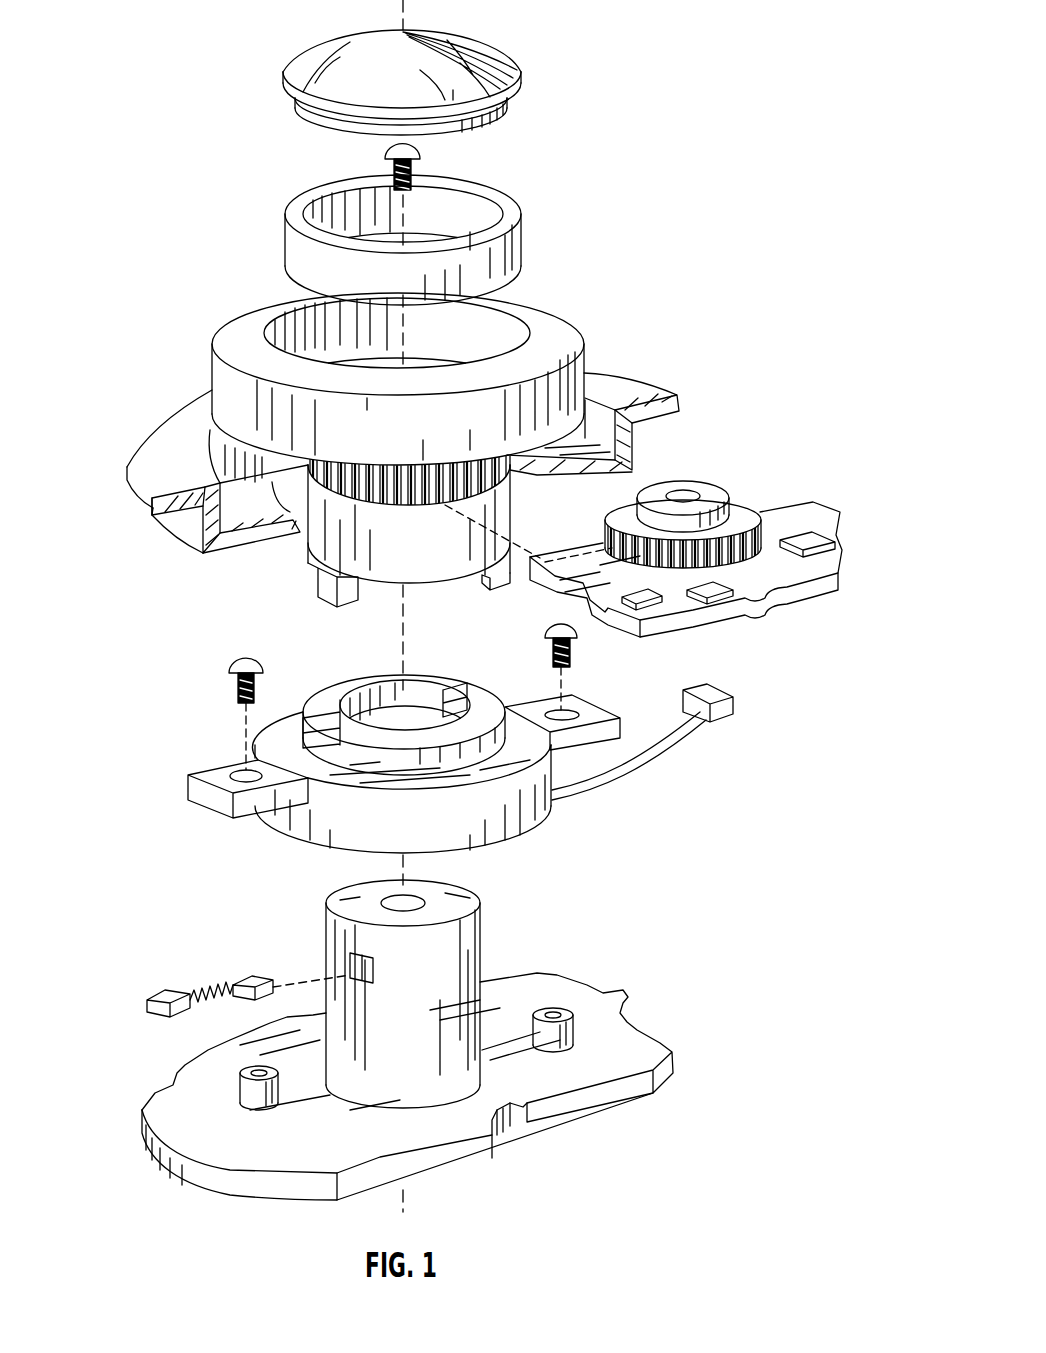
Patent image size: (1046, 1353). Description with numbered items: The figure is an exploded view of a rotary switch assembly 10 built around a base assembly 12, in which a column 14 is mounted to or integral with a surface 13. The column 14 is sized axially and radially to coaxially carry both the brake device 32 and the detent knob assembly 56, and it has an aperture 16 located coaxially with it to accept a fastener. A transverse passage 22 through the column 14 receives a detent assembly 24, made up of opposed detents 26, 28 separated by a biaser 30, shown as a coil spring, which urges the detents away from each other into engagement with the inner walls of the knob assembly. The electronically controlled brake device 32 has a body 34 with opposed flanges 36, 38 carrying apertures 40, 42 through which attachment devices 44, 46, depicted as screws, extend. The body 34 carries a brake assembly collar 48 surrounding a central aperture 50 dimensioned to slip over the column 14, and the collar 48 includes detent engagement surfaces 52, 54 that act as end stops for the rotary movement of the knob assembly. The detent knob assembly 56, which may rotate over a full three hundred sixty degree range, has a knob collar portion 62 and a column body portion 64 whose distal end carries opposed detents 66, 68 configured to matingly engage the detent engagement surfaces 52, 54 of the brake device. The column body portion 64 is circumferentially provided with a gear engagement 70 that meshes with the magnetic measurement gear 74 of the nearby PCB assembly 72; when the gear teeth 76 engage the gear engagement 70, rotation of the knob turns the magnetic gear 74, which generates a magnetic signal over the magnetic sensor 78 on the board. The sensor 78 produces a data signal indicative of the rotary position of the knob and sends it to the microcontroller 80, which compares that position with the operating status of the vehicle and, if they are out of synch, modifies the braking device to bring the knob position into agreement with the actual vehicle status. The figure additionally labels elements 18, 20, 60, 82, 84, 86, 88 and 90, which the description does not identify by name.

The rotary switch assembly 10 is at (682, 93).
The base assembly 12 is at (376, 1027).
The surface 13 is at (257, 1155).
The column 14 is at (470, 940).
The aperture 16 is at (390, 900).
The standoff 18 is at (568, 1032).
The standoff 20 is at (272, 1087).
The transverse passage 22 is at (362, 985).
The detent assembly 24 is at (213, 974).
The detent 26 is at (170, 993).
The detent 28 is at (243, 978).
The biaser 30 is at (212, 990).
The electronically controlled brake device 32 is at (439, 730).
The body 34 is at (530, 812).
The flange 36 is at (195, 806).
The flange 38 is at (598, 712).
The aperture 40 is at (238, 772).
The aperture 42 is at (572, 712).
The attachment device 44 is at (232, 658).
The attachment device 46 is at (545, 628).
The brake assembly collar 48 is at (348, 683).
The central aperture 50 is at (417, 698).
The detent engagement surface 52 is at (330, 722).
The detent engagement surface 54 is at (467, 702).
The detent knob assembly 56 is at (400, 453).
The magnet assembly 60 is at (381, 453).
The knob collar portion 62 is at (575, 325).
The column body portion 64 is at (305, 550).
The detent 66 is at (330, 592).
The detent 68 is at (503, 585).
The gear engagement 70 is at (495, 482).
The PCB assembly 72 is at (646, 549).
The magnetic measurement gear 74 is at (718, 495).
The gear teeth 76 is at (730, 560).
The magnetic sensor 78 is at (720, 597).
The microcontroller 80 is at (815, 535).
The sensor component 82 is at (660, 605).
The mounting plate 84 is at (150, 455).
The retaining ring 86 is at (500, 255).
The screw 88 is at (420, 162).
The cap 90 is at (500, 47).